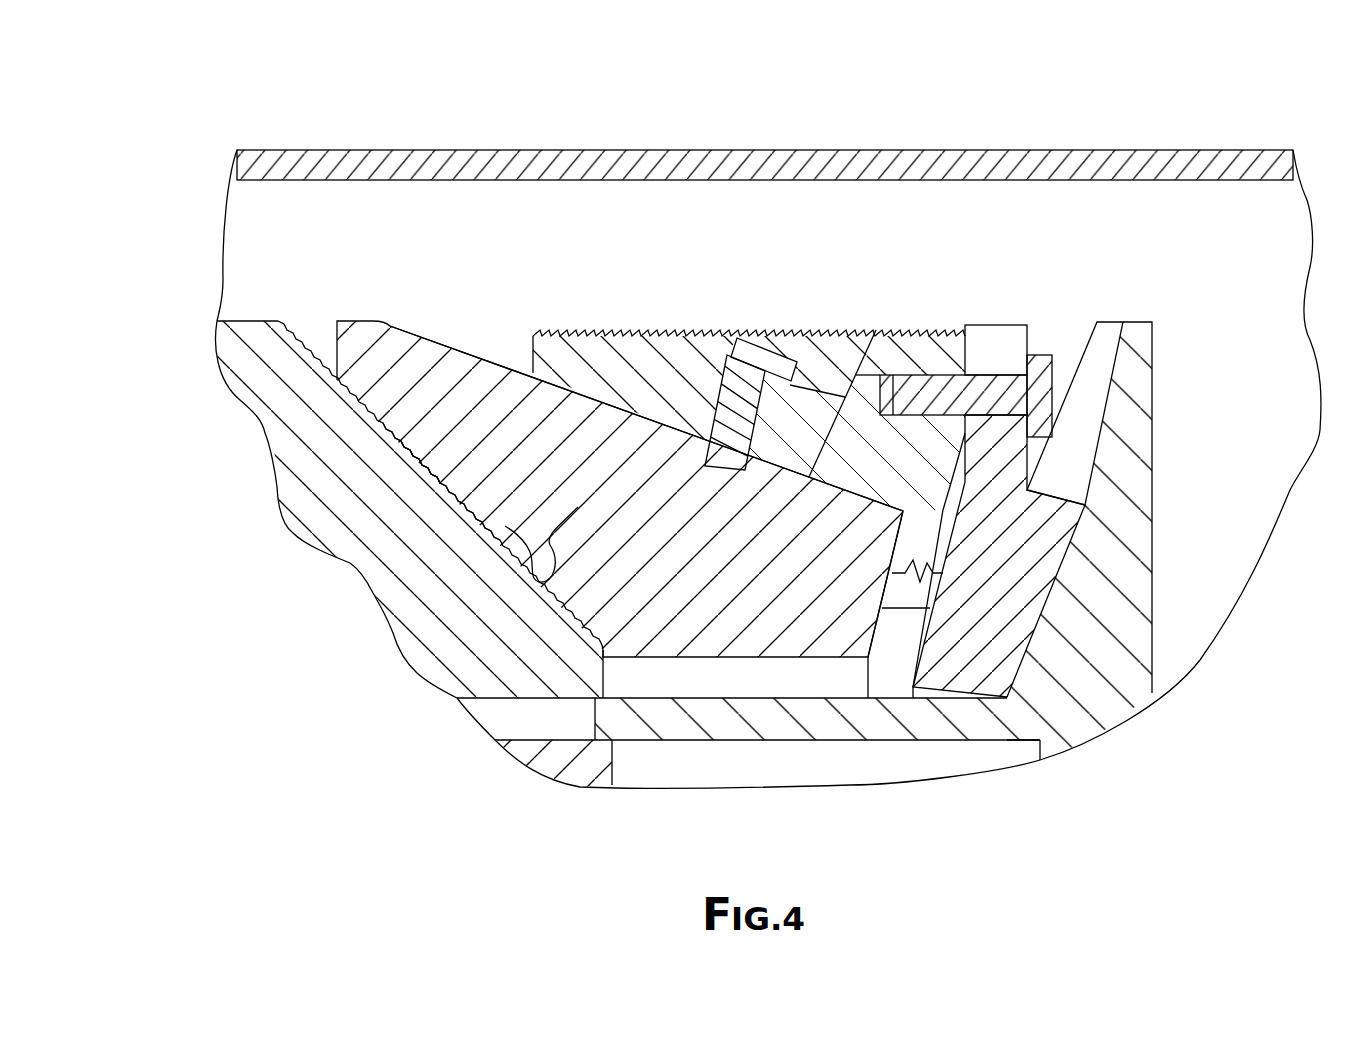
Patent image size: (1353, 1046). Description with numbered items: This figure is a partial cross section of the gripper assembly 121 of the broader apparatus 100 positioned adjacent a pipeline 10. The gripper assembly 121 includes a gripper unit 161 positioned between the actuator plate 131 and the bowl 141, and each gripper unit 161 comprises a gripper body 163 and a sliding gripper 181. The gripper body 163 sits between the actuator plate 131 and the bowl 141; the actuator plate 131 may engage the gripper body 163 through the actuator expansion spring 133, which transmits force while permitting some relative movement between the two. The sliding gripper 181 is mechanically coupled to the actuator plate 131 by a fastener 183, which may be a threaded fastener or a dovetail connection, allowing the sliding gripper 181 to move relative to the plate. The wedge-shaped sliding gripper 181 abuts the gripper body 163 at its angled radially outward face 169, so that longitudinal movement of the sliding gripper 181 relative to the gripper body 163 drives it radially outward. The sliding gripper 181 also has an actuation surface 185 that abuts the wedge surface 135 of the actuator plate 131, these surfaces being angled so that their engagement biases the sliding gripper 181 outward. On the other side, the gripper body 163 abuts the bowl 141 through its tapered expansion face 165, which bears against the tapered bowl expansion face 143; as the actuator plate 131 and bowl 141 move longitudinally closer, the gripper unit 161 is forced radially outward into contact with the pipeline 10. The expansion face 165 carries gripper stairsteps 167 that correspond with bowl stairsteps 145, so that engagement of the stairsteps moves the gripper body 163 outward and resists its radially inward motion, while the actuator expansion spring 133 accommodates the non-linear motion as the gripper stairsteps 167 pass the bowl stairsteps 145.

The pipeline 10 is at (1209, 150).
The mounting assembly 100 is at (192, 212).
The gripper assembly 121 is at (986, 273).
The actuator plate 131 is at (1130, 483).
The actuator expansion spring 133 is at (922, 582).
The wedge surface 135 is at (1063, 562).
The bowl 141 is at (277, 432).
The bowl expansion face 143 is at (447, 470).
The bowl stairsteps 145 is at (505, 526).
The gripper unit 161 is at (600, 318).
The gripper body 163 is at (731, 575).
The expansion face 165 is at (455, 530).
The gripper stairsteps 167 is at (433, 474).
The radially outward face 169 is at (618, 410).
The sliding gripper 181 is at (894, 463).
The fastener 183 is at (1052, 363).
The actuation surface 185 is at (1123, 423).